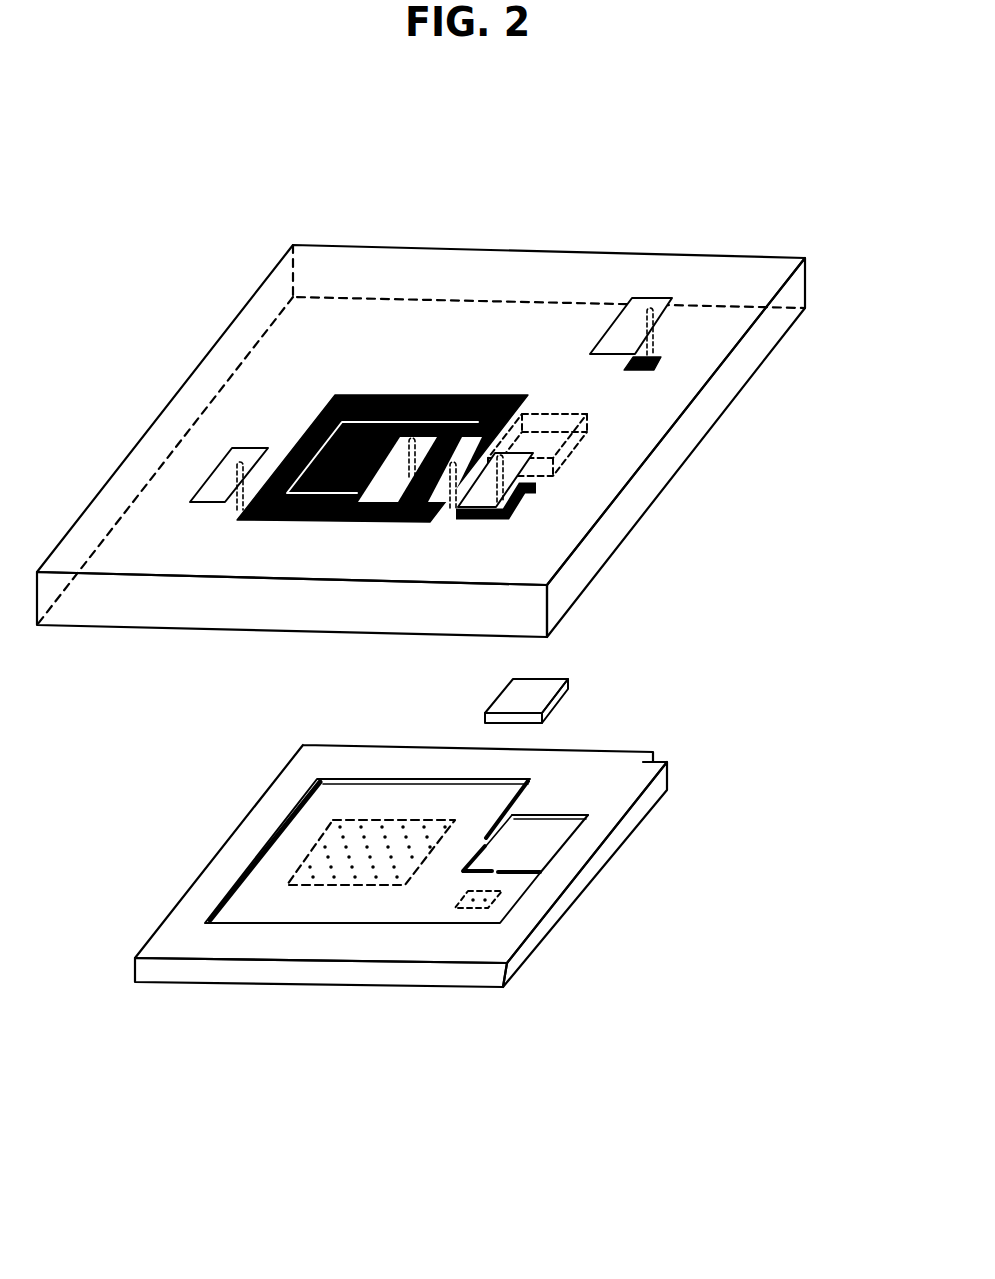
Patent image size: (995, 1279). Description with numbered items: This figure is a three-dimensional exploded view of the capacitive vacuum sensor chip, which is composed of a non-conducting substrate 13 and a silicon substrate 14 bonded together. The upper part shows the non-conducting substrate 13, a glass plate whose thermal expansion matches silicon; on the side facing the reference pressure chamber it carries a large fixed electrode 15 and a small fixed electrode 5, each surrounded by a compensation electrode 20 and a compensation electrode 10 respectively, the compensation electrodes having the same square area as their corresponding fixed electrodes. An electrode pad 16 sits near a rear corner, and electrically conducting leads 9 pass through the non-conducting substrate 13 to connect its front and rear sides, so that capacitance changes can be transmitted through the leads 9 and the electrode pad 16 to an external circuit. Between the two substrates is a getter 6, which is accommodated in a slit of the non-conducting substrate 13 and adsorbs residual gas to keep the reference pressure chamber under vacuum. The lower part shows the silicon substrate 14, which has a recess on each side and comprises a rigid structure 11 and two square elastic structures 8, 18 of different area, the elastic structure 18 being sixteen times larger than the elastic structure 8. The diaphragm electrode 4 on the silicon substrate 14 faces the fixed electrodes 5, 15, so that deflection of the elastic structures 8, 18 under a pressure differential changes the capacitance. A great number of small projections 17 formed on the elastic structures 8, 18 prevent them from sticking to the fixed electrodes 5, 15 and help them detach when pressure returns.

The diaphragm electrode 4 is at (260, 898).
The fixed electrode 5 is at (523, 503).
The getter 6 is at (540, 693).
The elastic structure 8 is at (497, 897).
The electrically conducting lead 9 is at (653, 335).
The compensation electrode 10 is at (505, 518).
The rigid structure 11 is at (615, 782).
The non-conducting substrate 13 is at (733, 275).
The silicon substrate 14 is at (622, 763).
The fixed electrode 15 is at (366, 394).
The electrode pad 16 is at (625, 325).
The projection 17 is at (328, 877).
The elastic structure 18 is at (355, 888).
The compensation electrode 20 is at (459, 396).